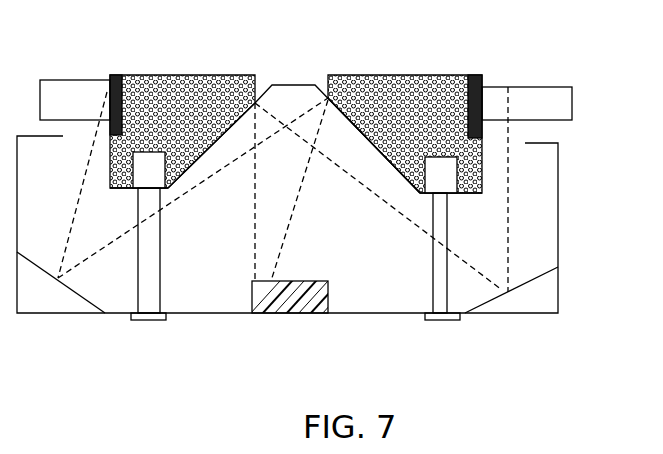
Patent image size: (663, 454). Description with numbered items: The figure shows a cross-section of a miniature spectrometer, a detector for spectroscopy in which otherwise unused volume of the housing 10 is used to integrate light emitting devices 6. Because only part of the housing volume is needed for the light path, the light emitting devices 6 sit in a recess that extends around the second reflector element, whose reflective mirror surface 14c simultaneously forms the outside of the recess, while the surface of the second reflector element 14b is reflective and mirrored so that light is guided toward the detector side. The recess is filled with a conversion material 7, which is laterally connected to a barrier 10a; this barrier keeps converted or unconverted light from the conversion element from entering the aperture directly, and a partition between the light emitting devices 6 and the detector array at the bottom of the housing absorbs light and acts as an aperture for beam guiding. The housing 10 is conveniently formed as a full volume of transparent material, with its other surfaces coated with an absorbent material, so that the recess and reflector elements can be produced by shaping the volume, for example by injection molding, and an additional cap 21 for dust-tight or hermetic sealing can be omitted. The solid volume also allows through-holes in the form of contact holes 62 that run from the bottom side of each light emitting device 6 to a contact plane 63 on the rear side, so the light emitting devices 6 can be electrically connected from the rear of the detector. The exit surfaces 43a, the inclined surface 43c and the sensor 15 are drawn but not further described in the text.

The conversion material 7 is at (425, 82).
The housing 10 is at (558, 208).
The barrier 10a is at (108, 75).
The cap 21 is at (70, 80).
The light emitting device 6 is at (148, 152).
The surface of the second reflector element 14b is at (290, 85).
The reflective mirror surface 14c is at (172, 190).
The exit surface 43a is at (118, 190).
The inclined surface 43c is at (417, 191).
The contact hole 62 is at (150, 320).
The contact plane 63 is at (166, 318).
The sensor 15 is at (290, 306).